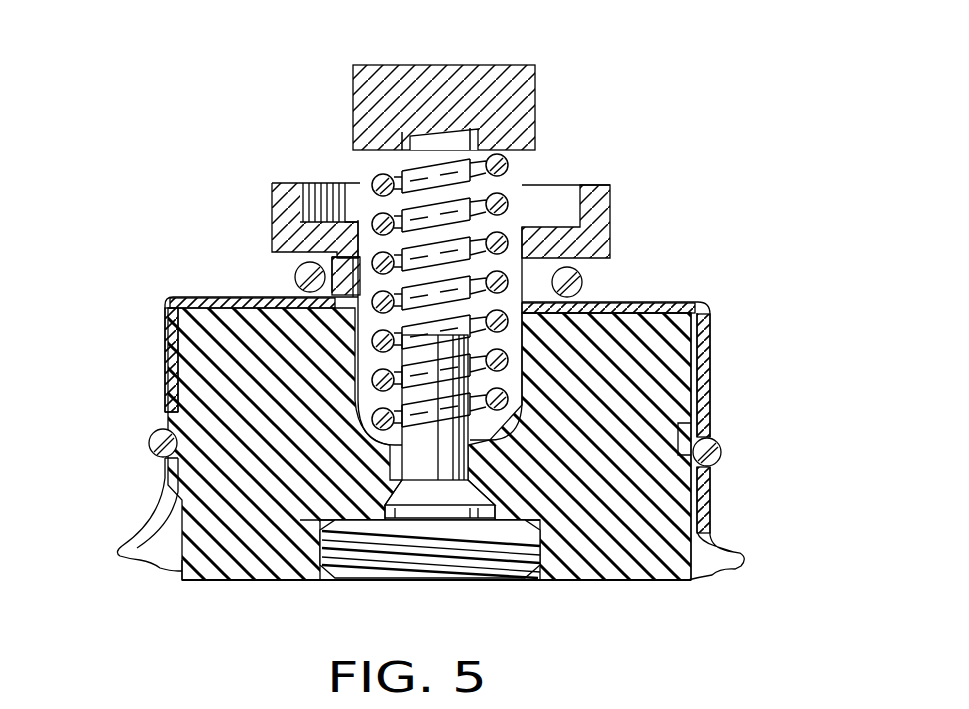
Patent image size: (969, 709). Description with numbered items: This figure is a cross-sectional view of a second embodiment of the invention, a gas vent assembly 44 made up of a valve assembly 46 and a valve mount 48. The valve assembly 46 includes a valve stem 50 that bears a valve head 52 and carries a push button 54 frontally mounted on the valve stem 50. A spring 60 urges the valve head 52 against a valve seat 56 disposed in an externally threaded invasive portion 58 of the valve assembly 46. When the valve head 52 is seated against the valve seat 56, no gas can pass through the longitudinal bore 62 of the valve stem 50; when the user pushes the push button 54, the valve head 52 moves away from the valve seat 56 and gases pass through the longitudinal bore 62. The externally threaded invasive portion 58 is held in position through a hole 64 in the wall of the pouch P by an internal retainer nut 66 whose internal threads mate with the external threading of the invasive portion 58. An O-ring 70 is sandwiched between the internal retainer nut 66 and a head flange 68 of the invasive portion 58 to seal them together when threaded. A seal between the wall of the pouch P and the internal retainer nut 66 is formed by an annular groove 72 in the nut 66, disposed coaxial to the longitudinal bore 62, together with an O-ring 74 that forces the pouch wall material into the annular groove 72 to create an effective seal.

The gas vent assembly 44 is at (783, 255).
The valve assembly 46 is at (648, 168).
The valve mount 48 is at (717, 367).
The valve stem 50 is at (423, 367).
The valve head 52 is at (478, 505).
The push button 54 is at (537, 103).
The valve seat 56 is at (383, 507).
The externally threaded invasive portion 58 is at (318, 527).
The spring 60 is at (372, 182).
The longitudinal bore 62 is at (532, 345).
The hole 64 is at (340, 252).
The internal retainer nut 66 is at (630, 585).
The head flange 68 is at (613, 257).
The O-ring 70 is at (585, 278).
The annular groove 72 is at (683, 500).
The O-ring 74 is at (720, 450).
The pouch P is at (115, 555).